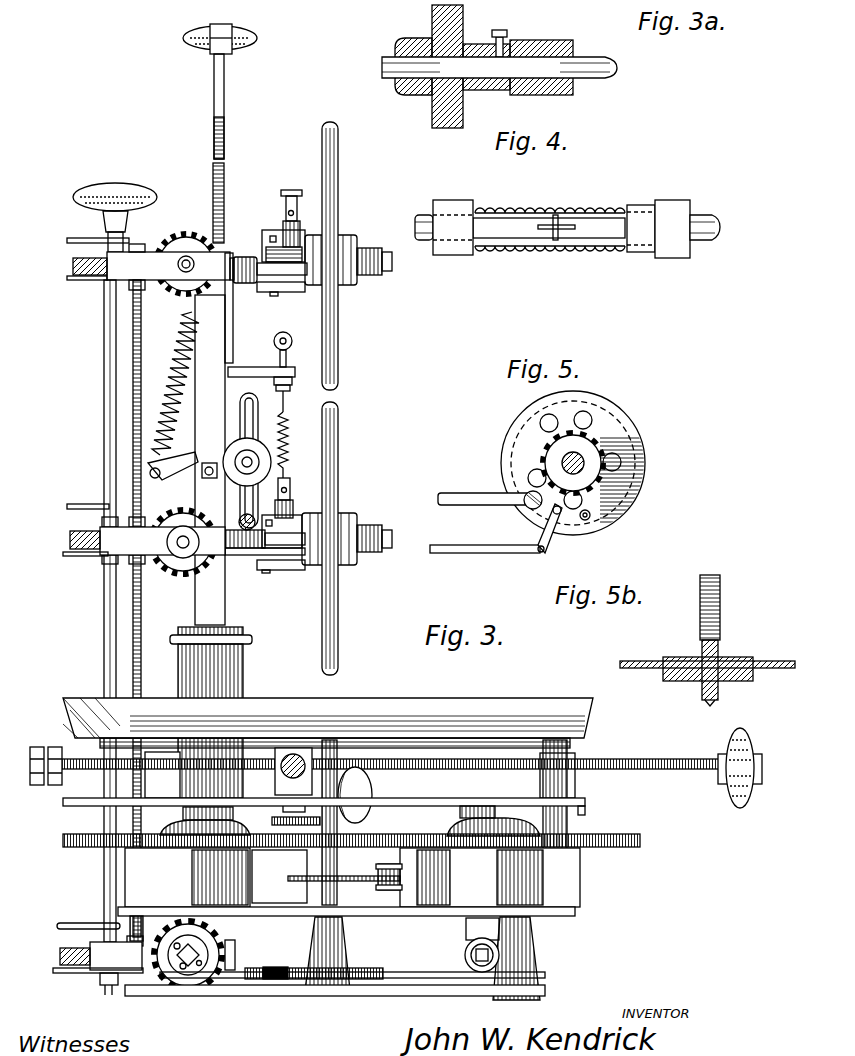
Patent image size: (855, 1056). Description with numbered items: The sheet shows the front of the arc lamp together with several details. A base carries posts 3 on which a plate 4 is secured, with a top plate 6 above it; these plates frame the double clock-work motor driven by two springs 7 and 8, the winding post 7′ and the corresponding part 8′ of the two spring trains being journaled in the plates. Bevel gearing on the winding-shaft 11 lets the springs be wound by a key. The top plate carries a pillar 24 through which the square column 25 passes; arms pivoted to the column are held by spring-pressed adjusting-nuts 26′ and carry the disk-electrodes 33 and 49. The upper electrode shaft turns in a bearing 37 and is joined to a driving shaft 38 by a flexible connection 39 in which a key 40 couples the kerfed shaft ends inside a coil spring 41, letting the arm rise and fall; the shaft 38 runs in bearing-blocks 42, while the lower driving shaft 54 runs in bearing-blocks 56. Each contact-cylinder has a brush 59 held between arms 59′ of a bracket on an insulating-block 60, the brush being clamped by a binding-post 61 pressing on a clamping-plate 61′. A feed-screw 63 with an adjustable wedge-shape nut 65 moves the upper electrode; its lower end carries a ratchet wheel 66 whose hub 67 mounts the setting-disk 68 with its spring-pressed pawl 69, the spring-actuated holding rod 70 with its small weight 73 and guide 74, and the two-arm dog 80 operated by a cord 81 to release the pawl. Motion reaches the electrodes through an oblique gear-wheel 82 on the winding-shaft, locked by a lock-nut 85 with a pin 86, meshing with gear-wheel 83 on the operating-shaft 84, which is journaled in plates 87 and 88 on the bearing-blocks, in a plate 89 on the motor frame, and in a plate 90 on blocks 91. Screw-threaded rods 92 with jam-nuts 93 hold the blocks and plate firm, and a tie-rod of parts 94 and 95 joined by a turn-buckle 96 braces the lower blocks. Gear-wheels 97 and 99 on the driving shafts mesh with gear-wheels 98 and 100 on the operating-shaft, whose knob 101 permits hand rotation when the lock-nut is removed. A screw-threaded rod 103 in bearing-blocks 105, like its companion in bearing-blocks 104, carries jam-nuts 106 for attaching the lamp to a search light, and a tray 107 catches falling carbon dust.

In FIG. 3, the posts 3 is at (342, 935).
In FIG. 3, the plate 4 is at (546, 917).
In FIG. 3, the top plate 6 is at (582, 808).
In FIG. 3, the spring 7 is at (216, 877).
In FIG. 3, the rack bar 7′ is at (63, 840).
In FIG. 3, the spring 8 is at (490, 877).
In FIG. 3, the spool / shaft pinion 8′ is at (340, 888).
In FIG. 3A, the winding-shaft 11 is at (577, 65).
In FIG. 3, the pillar or post 24 is at (232, 680).
In FIG. 3, the square column 25 is at (226, 628).
In FIG. 3, the spring pressed adjusting-nut 26′ is at (246, 286).
In FIG. 3, the disk-electrode 33 is at (338, 352).
In FIG. 4, the bearing 37 is at (450, 206).
In FIG. 3, the driving shaft 38 is at (183, 272).
In FIG. 4, the driving shaft 38 is at (702, 244).
In FIG. 4, the flexible connection 39 is at (520, 250).
In FIG. 4, the key 40 is at (556, 222).
In FIG. 4, the coil spring 41 is at (614, 253).
In FIG. 3, the bearing-blocks 42 is at (168, 266).
In FIG. 4, the bearing-blocks 42 is at (672, 260).
In FIG. 3, the disk-electrode 49 is at (338, 632).
In FIG. 3, the driving shaft 54 is at (182, 548).
In FIG. 3, the bearing-blocks 56 is at (162, 541).
In FIG. 3, the brush 59 is at (294, 257).
In FIG. 3, the arms 59′ is at (313, 234).
In FIG. 3, the insulating-block 60 is at (299, 292).
In FIG. 3, the binding-post 61 is at (286, 224).
In FIG. 3, the clamping-plate 61′ is at (284, 246).
In FIG. 5, the feed-screw 63 is at (588, 450).
In FIG. 5B, the feed-screw 63 is at (716, 626).
In FIG. 3, the adjustable wedge-shape nut 65 is at (223, 196).
In FIG. 5, the ratchet wheel 66 is at (556, 466).
In FIG. 5B, the hub 67 is at (700, 680).
In FIG. 5, the setting-disk 68 is at (585, 521).
In FIG. 5B, the setting-disk 68 is at (772, 657).
In FIG. 5, the spring-pressed pawl 69 is at (622, 512).
In FIG. 5, the spring-actuated holding rod 70 is at (461, 493).
In FIG. 3, the small weight 73 is at (262, 462).
In FIG. 3, the guide 74 is at (253, 420).
In FIG. 5, the two-arm dog 80 is at (546, 528).
In FIG. 5, the operating-cord or chain 81 is at (487, 553).
In FIG. 3, the oblique gear-wheel 82 is at (210, 944).
In FIG. 3A, the oblique gear-wheel 82 is at (436, 111).
In FIG. 3, the oblique gear-wheel 83 is at (60, 952).
In FIG. 3, the operating-shaft 84 is at (104, 855).
In FIG. 3, the lock-nut 85 is at (200, 962).
In FIG. 3A, the lock-nut 85 is at (413, 40).
In FIG. 3, the pin 86 is at (182, 966).
In FIG. 3A, the pin 86 is at (448, 44).
In FIG. 3, the plates 87 is at (70, 240).
In FIG. 3, the plates 88 is at (68, 278).
In FIG. 3, the plate 89 is at (73, 806).
In FIG. 3, the plate 90 is at (79, 926).
In FIG. 3, the blocks 91 is at (127, 960).
In FIG. 3, the screw-threaded rods 92 is at (132, 628).
In FIG. 3, the jam-nuts 93 is at (128, 290).
In FIG. 3, the tie-rod part 94 is at (248, 968).
In FIG. 3, the tie-rod part 95 is at (386, 978).
In FIG. 3, the turn-buckle 96 is at (344, 968).
In FIG. 3, the oblique gear-wheel 97 is at (186, 232).
In FIG. 3, the oblique gear-wheel 98 is at (92, 276).
In FIG. 3, the oblique gear-wheel 99 is at (206, 562).
In FIG. 3, the oblique gear-wheel 100 is at (70, 548).
In FIG. 3, the knob 101 is at (116, 183).
In FIG. 3, the screw-threaded rod 103 is at (647, 762).
In FIG. 3, the bearing-blocks 104 is at (293, 780).
In FIG. 3, the bearing-blocks 105 is at (588, 752).
In FIG. 3, the jam-nuts 106 is at (53, 746).
In FIG. 3, the tray 107 is at (462, 712).